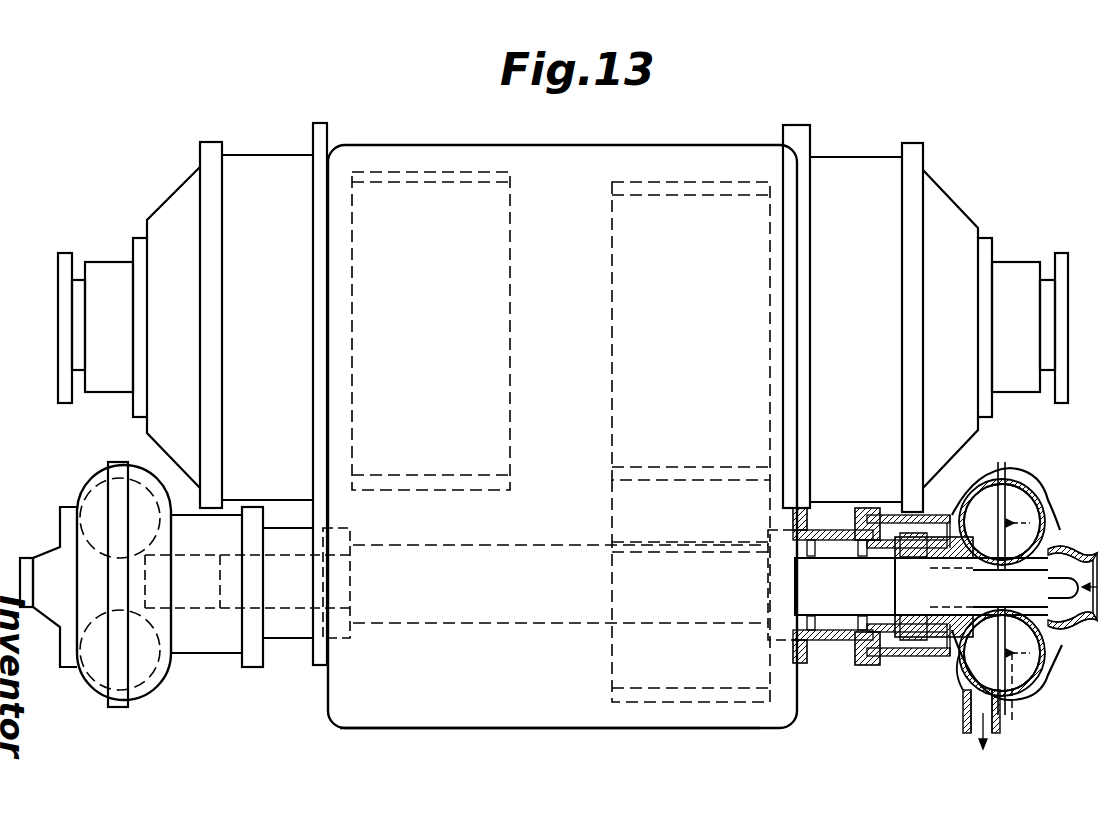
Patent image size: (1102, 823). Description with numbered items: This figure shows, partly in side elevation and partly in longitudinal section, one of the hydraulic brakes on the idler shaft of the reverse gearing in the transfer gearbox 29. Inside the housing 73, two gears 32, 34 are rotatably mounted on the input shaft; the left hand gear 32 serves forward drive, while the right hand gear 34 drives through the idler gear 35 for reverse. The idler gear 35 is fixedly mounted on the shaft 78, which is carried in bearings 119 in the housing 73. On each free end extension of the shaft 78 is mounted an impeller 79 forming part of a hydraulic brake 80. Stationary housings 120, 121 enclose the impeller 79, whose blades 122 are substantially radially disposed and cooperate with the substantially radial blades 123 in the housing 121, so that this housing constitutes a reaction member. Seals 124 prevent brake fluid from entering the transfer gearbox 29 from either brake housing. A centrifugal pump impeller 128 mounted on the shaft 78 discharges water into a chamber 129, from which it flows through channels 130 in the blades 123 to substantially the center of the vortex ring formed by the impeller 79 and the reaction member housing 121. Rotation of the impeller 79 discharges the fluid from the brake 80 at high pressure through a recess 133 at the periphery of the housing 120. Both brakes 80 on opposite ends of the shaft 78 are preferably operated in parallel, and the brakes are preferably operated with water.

The transfer gearbox 29 is at (463, 704).
The left hand gear 32 is at (506, 313).
The right hand gear 34 is at (613, 350).
The idler gear 35 is at (618, 677).
The housing 73 is at (578, 723).
The shaft 78 is at (820, 582).
The impeller 79 is at (146, 498).
The hydraulic brake 80 is at (150, 682).
The bearings 119 is at (340, 637).
The stationary housing 120 is at (172, 662).
The housing (reaction member) 121 is at (85, 680).
The blades 122 is at (982, 668).
The radial blades 123 is at (1015, 507).
The seals 124 is at (830, 640).
The centrifugal pump impeller 128 is at (1057, 550).
The chamber 129 is at (1052, 648).
The channels 130 is at (1031, 698).
The recess 133 is at (968, 725).